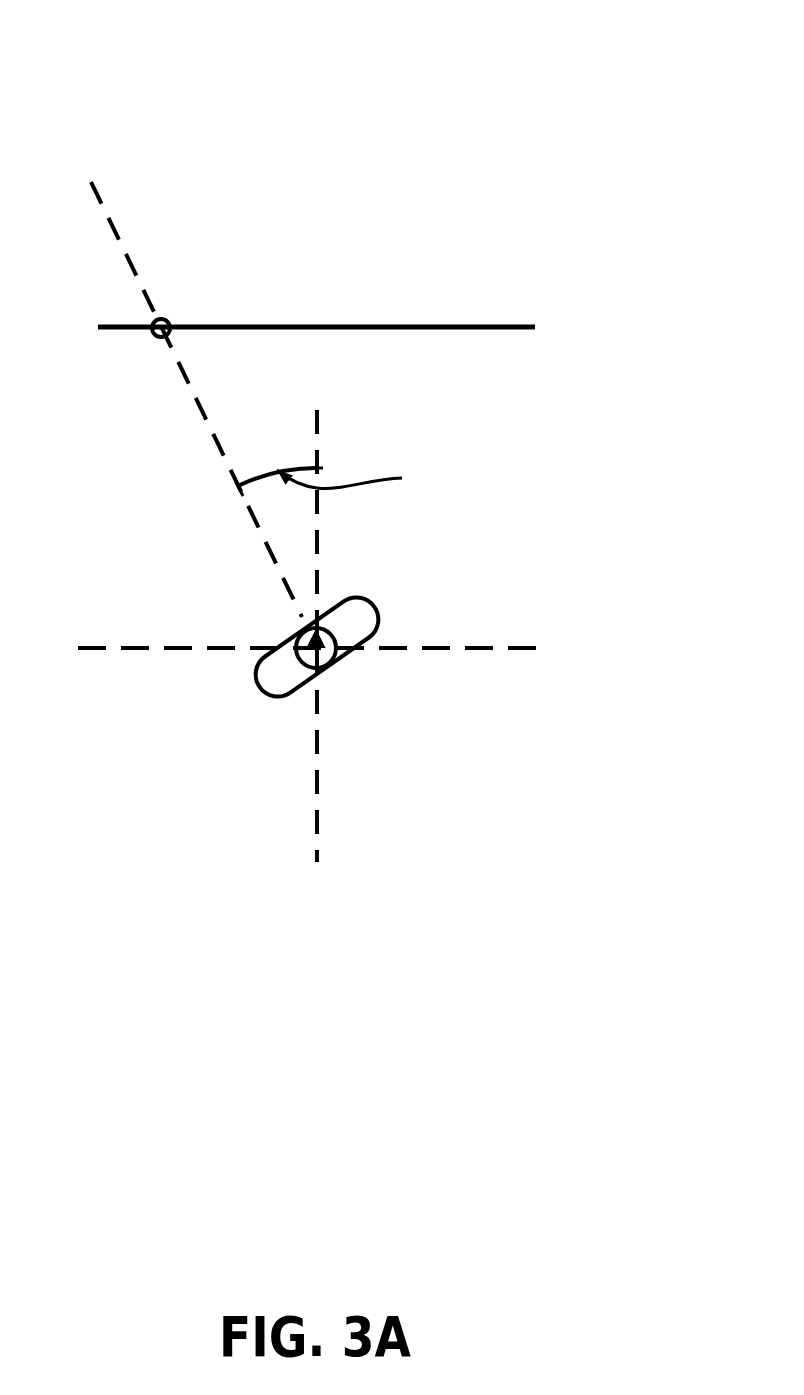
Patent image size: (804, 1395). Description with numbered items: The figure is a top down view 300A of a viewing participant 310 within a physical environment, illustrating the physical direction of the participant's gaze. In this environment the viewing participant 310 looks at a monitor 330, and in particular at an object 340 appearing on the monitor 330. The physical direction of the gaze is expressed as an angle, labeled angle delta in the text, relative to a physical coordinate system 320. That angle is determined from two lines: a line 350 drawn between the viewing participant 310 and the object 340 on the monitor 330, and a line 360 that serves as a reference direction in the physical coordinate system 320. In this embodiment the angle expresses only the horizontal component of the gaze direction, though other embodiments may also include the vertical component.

The top down view 300A is at (358, 31).
The viewing participant 310 is at (265, 683).
The physical coordinate system 320 is at (507, 650).
The monitor 330 is at (514, 323).
The object 340 is at (143, 345).
The line 350 is at (122, 232).
The line 360 is at (320, 427).